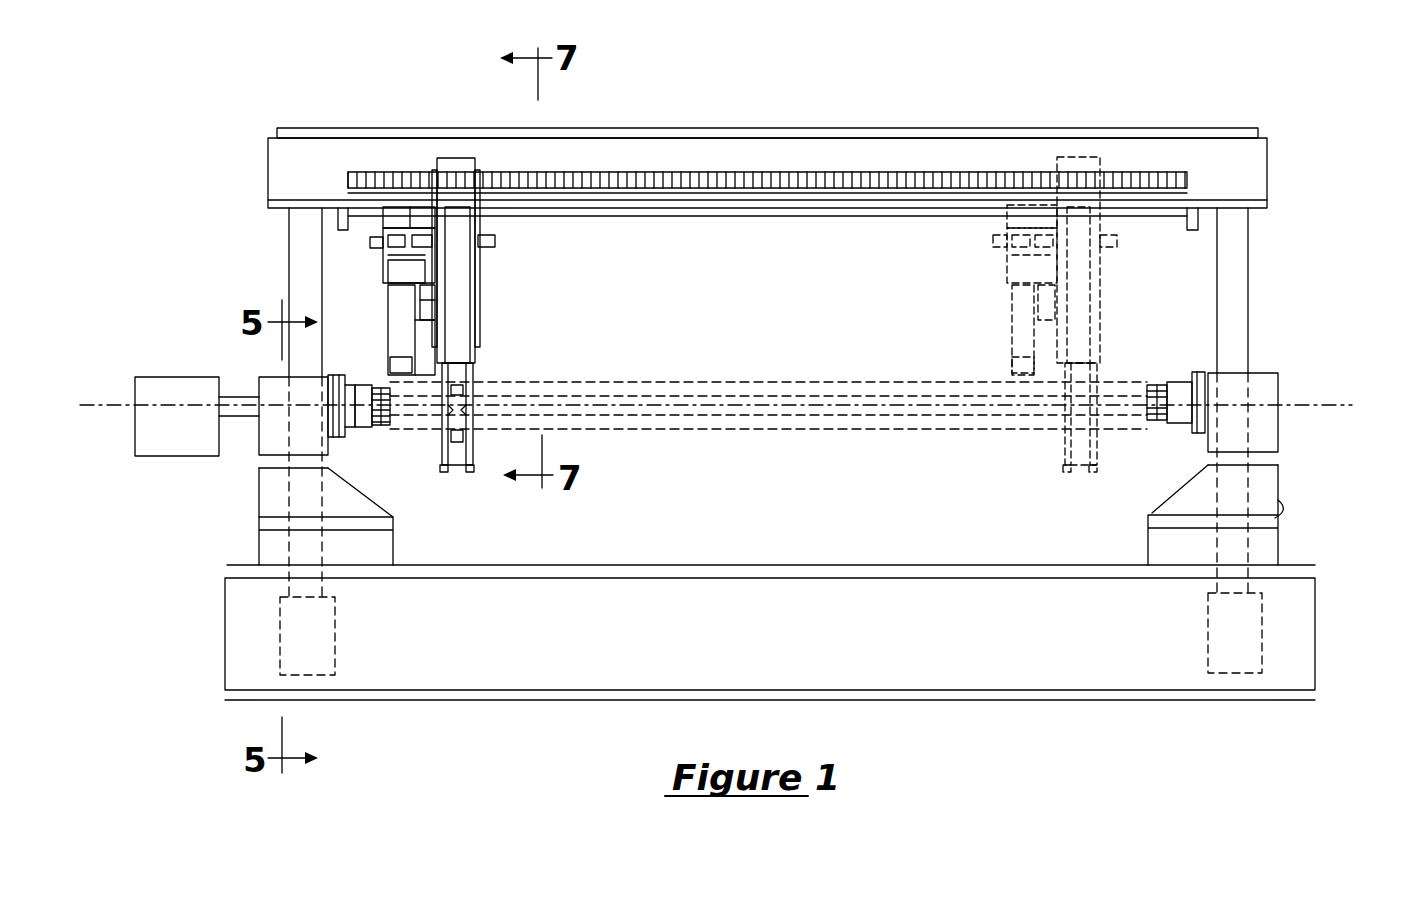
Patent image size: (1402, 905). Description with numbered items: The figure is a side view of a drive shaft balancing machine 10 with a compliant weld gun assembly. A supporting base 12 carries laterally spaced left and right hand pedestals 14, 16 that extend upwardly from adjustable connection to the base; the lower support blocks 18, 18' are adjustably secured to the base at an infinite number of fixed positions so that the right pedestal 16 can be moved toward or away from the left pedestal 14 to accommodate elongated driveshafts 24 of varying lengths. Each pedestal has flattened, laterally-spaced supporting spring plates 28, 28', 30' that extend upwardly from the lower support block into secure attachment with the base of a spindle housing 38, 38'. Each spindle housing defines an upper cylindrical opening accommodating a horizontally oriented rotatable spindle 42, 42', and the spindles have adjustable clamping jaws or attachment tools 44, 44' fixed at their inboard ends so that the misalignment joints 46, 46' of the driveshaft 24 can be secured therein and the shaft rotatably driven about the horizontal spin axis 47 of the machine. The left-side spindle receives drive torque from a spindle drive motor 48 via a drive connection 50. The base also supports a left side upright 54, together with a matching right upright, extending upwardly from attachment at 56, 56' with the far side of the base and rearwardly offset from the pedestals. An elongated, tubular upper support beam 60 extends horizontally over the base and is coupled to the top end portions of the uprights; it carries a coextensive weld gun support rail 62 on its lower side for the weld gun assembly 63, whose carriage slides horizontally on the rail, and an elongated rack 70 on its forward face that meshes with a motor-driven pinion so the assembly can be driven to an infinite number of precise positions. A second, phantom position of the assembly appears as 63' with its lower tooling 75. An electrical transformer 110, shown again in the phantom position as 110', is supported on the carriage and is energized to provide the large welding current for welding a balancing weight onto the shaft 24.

The drive shaft balancing machine 10 is at (1047, 126).
The supporting base 12 is at (1028, 672).
The left hand pedestal 14 is at (241, 492).
The right hand pedestal 16 is at (1286, 442).
The lower support block 18 is at (353, 541).
The lower support block 18' is at (1170, 540).
The driveshaft 24 is at (706, 386).
The supporting spring plate 28 is at (337, 490).
The supporting spring plate 28' is at (1259, 491).
The supporting spring plate 30' is at (1320, 527).
The spindle housing 38 is at (254, 400).
The spindle housing 38' is at (1275, 404).
The spindle 42 is at (341, 372).
The spindle 42' is at (1247, 373).
The clamping jaws 44 is at (368, 365).
The clamping jaws 44' is at (1177, 358).
The misalignment joint 46 is at (407, 444).
The misalignment joint 46' is at (1137, 443).
The horizontal spin axis 47 is at (1345, 402).
The spindle drive motor 48 is at (150, 378).
The drive connection 50 is at (236, 418).
The left side upright 54 is at (298, 265).
The attachment 56 is at (342, 636).
The attachment 56' is at (1198, 633).
The upper support beam 60 is at (748, 150).
The weld gun support rail 62 is at (780, 206).
The weld gun assembly 63 is at (456, 276).
The tool carriage (second position) 63' is at (1080, 275).
The rack 70 is at (630, 176).
The tool holder 75 is at (468, 378).
The electrical transformer 110 is at (432, 227).
The tool positioning mechanism (second position) 110' is at (1055, 229).